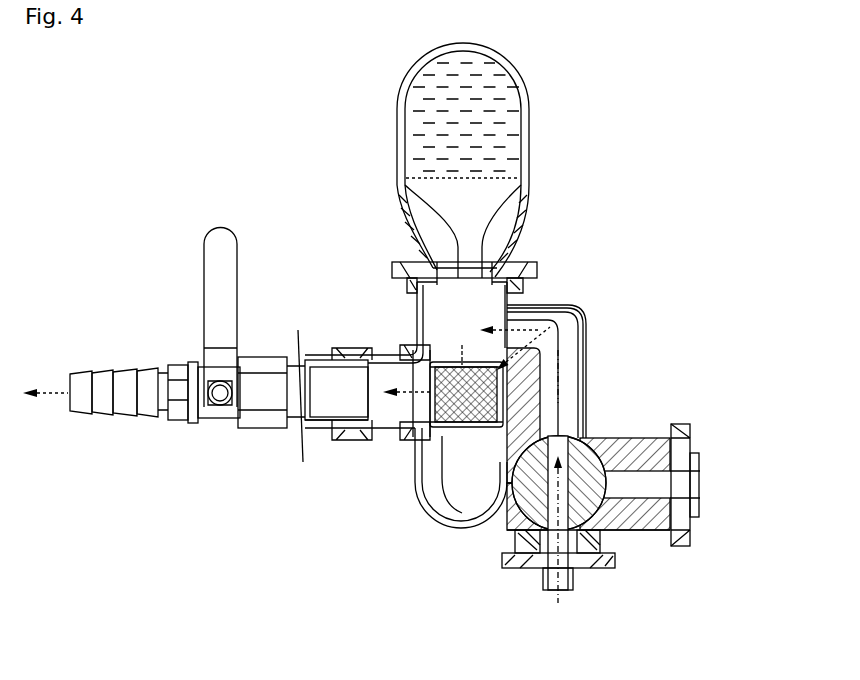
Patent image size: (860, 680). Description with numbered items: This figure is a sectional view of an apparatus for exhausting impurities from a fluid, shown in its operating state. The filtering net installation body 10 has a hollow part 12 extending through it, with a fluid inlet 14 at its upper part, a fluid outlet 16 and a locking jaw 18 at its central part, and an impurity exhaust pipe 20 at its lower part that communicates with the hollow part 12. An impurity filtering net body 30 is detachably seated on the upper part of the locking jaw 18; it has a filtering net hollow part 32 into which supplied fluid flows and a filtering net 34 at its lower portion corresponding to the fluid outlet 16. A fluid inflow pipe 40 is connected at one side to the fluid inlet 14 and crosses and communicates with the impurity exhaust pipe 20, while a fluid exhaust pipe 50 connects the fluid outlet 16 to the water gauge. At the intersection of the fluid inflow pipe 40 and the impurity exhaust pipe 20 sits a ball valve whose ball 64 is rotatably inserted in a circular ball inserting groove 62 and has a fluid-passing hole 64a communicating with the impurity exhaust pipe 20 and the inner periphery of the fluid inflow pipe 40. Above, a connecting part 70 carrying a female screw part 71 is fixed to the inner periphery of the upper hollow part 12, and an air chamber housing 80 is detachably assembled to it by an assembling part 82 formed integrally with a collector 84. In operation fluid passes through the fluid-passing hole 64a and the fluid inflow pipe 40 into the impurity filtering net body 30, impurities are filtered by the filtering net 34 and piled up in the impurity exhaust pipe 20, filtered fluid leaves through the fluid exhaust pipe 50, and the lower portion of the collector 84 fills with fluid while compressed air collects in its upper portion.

The filtering net installation body 10 is at (403, 306).
The hollow part 12 is at (430, 207).
The fluid inlet 14 is at (513, 307).
The fluid outlet 16 is at (383, 357).
The locking jaw 18 is at (433, 522).
The impurity exhaust pipe 20 is at (440, 527).
The impurity filtering net body 30 is at (578, 316).
The filtering net hollow part 32 is at (471, 355).
The filtering net 34 is at (422, 412).
The fluid inflow pipe 40 is at (582, 375).
The fluid exhaust pipe 50 is at (350, 432).
The ball inserting groove 62 is at (507, 528).
The ball 64 is at (600, 438).
The fluid-passing hole 64a is at (641, 438).
The connecting part 70 is at (537, 277).
The female screw part 71 is at (400, 228).
The air chamber housing 80 is at (554, 160).
The assembling part 82 is at (530, 157).
The collector 84 is at (527, 102).